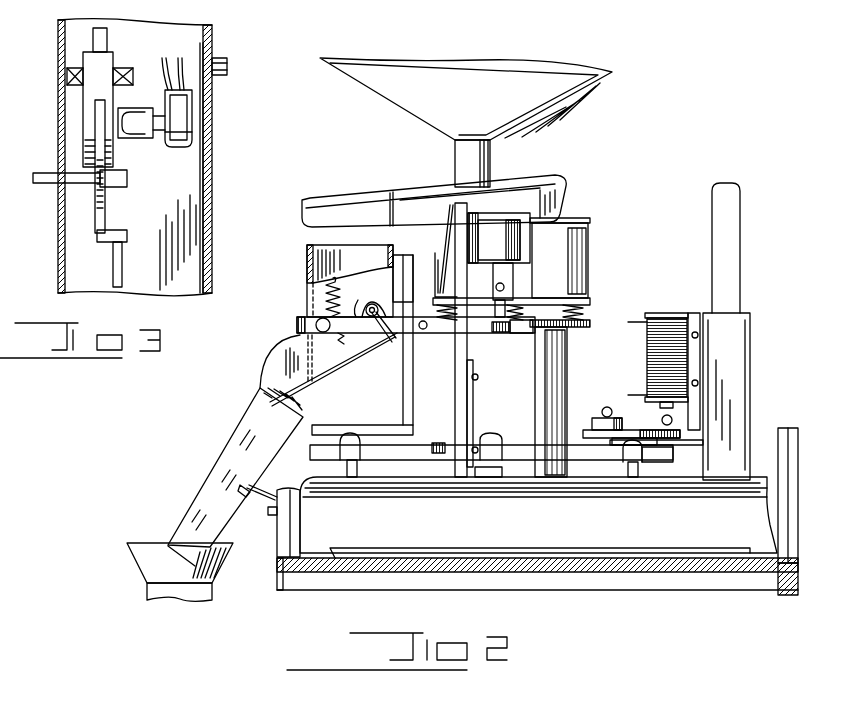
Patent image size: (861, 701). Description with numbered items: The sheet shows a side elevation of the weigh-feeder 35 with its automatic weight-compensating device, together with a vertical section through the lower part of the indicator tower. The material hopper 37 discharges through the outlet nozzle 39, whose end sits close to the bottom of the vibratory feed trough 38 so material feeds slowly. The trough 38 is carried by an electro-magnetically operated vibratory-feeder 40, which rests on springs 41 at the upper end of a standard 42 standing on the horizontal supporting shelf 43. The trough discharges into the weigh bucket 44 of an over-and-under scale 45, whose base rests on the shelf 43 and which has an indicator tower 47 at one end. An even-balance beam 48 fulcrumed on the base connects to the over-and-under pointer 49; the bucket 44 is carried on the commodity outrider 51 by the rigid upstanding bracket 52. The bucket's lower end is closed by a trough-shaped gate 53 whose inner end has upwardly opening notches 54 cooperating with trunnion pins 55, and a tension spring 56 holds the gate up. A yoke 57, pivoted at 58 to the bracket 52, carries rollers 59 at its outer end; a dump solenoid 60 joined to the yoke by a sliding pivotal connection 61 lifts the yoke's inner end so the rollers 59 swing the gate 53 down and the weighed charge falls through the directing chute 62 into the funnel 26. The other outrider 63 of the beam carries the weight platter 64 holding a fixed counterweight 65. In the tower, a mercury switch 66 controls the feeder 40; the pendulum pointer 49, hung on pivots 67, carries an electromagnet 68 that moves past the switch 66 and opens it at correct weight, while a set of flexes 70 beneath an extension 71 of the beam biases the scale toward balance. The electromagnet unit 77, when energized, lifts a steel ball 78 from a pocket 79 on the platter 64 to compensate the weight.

In FIG. 2, the funnel 26 is at (142, 560).
In FIG. 2, the weigh-feeder 35 is at (605, 259).
In FIG. 2, the material hopper 37 is at (566, 97).
In FIG. 2, the vibratory feed trough 38 is at (346, 195).
In FIG. 2, the outlet nozzle 39 is at (488, 158).
In FIG. 2, the vibratory-feeder 40 is at (590, 230).
In FIG. 2, the springs 41 is at (583, 312).
In FIG. 2, the standard 42 is at (567, 346).
In FIG. 2, the horizontal supporting shelf 43 is at (656, 571).
In FIG. 2, the weigh bucket 44 is at (307, 265).
In FIG. 2, the scale 45 is at (600, 540).
In FIG. 3, the indicator tower 47 is at (212, 182).
In FIG. 2, the indicator tower 47 is at (750, 406).
In FIG. 2, the even-balance beam 48 is at (440, 445).
In FIG. 3, the over-and-under pointer 49 is at (93, 38).
In FIG. 2, the commodity outrider 51 is at (340, 446).
In FIG. 2, the upstanding bracket 52 is at (403, 388).
In FIG. 2, the trough-shaped gate 53 is at (328, 365).
In FIG. 2, the notches 54 is at (369, 305).
In FIG. 2, the trunnion pins 55 is at (380, 322).
In FIG. 2, the tension spring 56 is at (328, 300).
In FIG. 2, the yoke 57 is at (467, 345).
In FIG. 2, the pivot 58 is at (423, 330).
In FIG. 2, the rollers 59 is at (297, 322).
In FIG. 2, the dump solenoid 60 is at (500, 221).
In FIG. 2, the sliding pivotal connection 61 is at (506, 334).
In FIG. 2, the directing chute 62 is at (218, 470).
In FIG. 2, the outrider 63 is at (650, 445).
In FIG. 2, the weight platter 64 is at (628, 430).
In FIG. 2, the fixed counterweight 65 is at (600, 420).
In FIG. 3, the mercury switch 66 is at (192, 120).
In FIG. 3, the pivots 67 is at (125, 68).
In FIG. 3, the electromagnet 68 is at (135, 138).
In FIG. 3, the set of flexes 70 is at (105, 212).
In FIG. 3, the extension 71 is at (52, 183).
In FIG. 2, the electromagnet unit 77 is at (647, 352).
In FIG. 2, the steel ball 78 is at (672, 419).
In FIG. 2, the pocket 79 is at (680, 434).